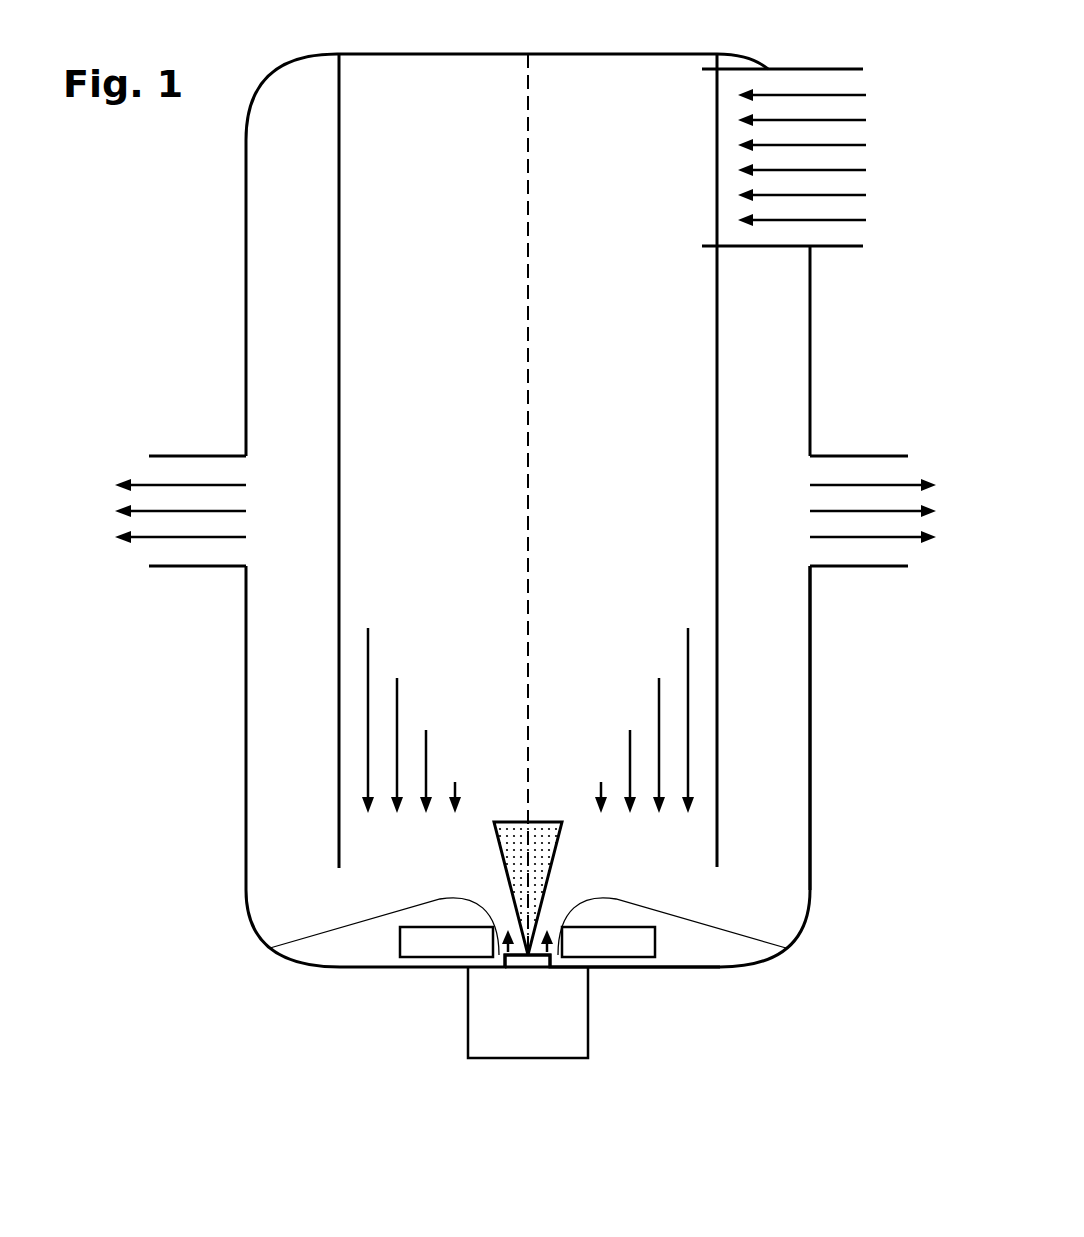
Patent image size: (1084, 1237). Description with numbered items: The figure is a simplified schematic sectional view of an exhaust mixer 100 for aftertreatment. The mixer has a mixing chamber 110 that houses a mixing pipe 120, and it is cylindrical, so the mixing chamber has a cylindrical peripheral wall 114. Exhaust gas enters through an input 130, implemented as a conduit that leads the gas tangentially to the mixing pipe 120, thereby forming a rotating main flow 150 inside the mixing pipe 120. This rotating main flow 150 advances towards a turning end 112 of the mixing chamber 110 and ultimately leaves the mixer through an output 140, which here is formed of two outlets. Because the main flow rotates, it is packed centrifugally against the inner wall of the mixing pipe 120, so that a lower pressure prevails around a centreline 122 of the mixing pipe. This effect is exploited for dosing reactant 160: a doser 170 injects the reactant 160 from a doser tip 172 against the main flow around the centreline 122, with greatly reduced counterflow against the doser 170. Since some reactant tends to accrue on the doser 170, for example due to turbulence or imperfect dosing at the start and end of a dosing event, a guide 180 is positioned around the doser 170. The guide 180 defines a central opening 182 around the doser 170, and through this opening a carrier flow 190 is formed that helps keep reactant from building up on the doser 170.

The exhaust mixer 100 is at (272, 36).
The mixing chamber 110 is at (466, 510).
The turning end 112 is at (663, 1010).
The peripheral wall 114 is at (856, 728).
The mixing pipe 120 is at (420, 461).
The centreline 122 is at (325, 503).
The input 130 is at (800, 204).
The output 140 is at (525, 556).
The rotating main flow 150 is at (408, 720).
The reactant 160 is at (342, 882).
The doser 170 is at (465, 1014).
The doser tip 172 is at (460, 987).
The guide 180 is at (508, 968).
The central opening 182 is at (270, 948).
The carrier flow 190 is at (582, 996).